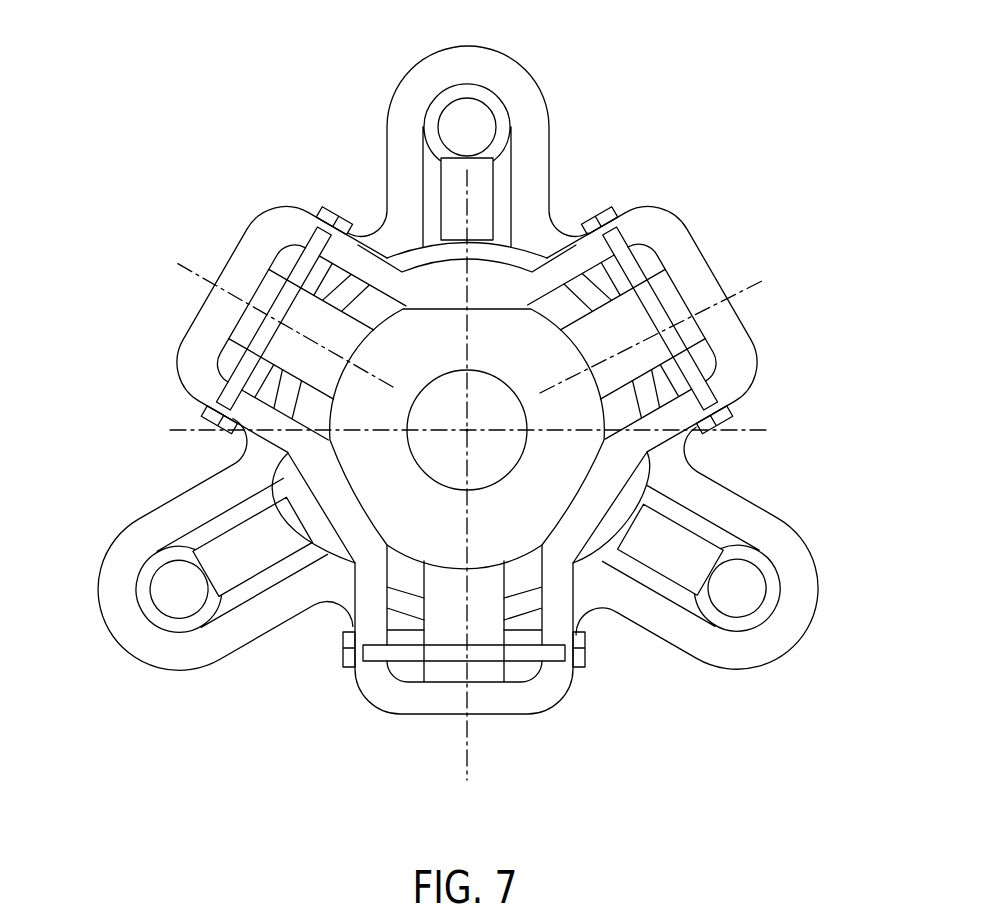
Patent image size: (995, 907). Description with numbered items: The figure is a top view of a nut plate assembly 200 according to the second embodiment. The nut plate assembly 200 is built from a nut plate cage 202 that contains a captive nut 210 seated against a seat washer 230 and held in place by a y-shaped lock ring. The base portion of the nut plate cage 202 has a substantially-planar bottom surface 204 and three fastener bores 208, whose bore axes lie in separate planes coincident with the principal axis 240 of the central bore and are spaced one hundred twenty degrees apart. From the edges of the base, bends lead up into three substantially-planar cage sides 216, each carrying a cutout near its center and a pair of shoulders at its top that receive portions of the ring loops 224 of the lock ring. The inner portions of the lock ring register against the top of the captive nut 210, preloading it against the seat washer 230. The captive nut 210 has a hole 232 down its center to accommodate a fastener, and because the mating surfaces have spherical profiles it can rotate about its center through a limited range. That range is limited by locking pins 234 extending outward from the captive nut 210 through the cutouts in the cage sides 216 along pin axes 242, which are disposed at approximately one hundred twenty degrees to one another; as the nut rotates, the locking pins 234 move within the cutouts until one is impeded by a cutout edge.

The nut plate assembly 200 is at (267, 93).
The nut plate cage 202 is at (182, 494).
The bottom surface 204 is at (745, 510).
The fastener bores 208 is at (464, 93).
The captive nut 210 is at (498, 365).
The cage sides 216 is at (226, 376).
The ring loops 224 is at (247, 243).
The seat washer 230 is at (343, 583).
The hole 232 is at (445, 458).
The principal axis 240 is at (465, 428).
The locking pins 234 is at (240, 332).
The pin axes 242 is at (186, 268).